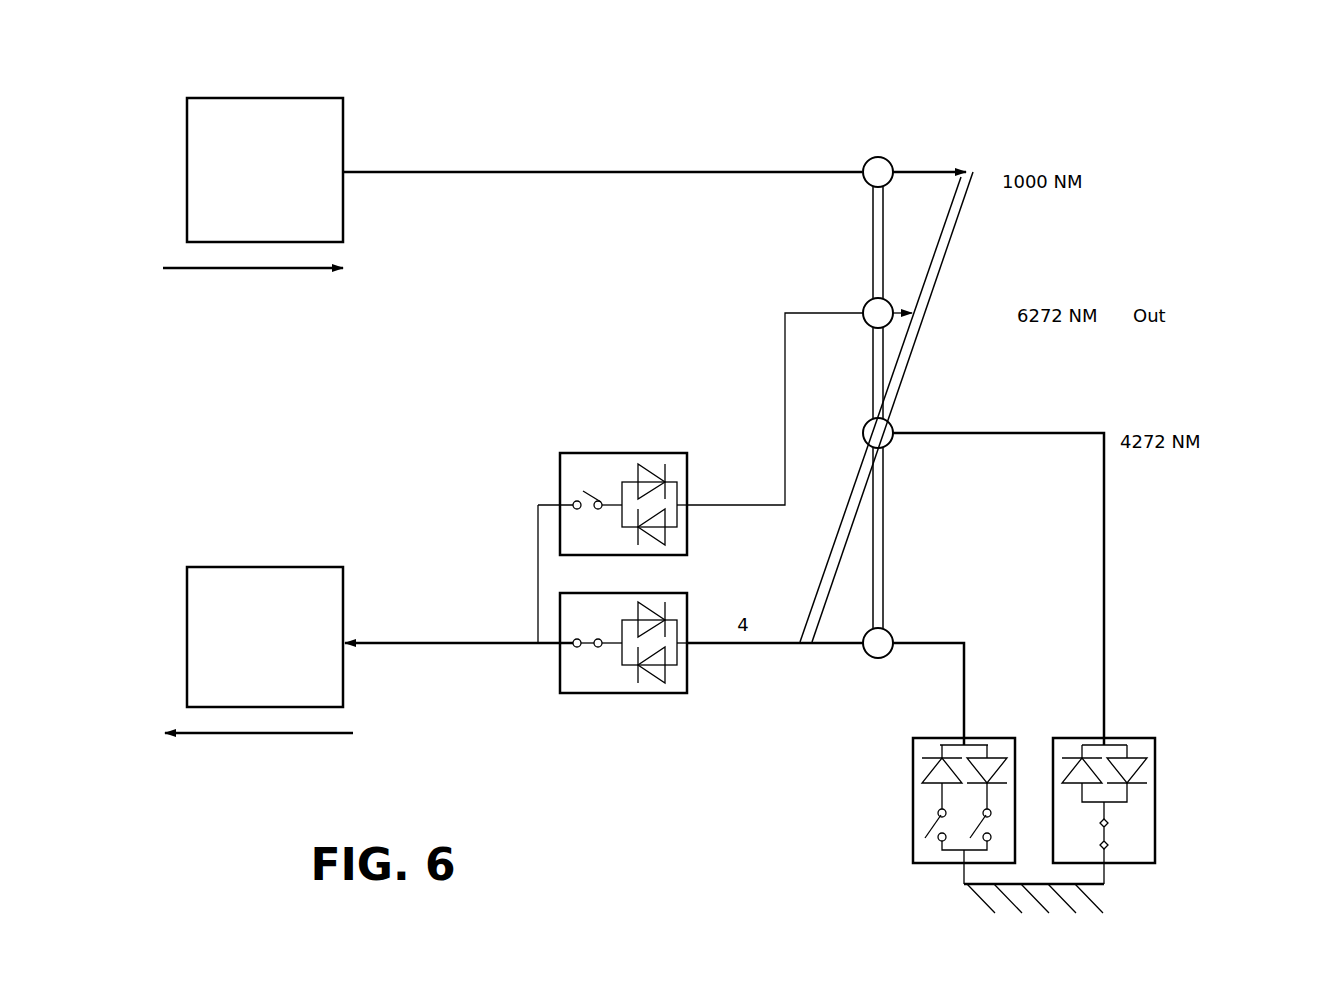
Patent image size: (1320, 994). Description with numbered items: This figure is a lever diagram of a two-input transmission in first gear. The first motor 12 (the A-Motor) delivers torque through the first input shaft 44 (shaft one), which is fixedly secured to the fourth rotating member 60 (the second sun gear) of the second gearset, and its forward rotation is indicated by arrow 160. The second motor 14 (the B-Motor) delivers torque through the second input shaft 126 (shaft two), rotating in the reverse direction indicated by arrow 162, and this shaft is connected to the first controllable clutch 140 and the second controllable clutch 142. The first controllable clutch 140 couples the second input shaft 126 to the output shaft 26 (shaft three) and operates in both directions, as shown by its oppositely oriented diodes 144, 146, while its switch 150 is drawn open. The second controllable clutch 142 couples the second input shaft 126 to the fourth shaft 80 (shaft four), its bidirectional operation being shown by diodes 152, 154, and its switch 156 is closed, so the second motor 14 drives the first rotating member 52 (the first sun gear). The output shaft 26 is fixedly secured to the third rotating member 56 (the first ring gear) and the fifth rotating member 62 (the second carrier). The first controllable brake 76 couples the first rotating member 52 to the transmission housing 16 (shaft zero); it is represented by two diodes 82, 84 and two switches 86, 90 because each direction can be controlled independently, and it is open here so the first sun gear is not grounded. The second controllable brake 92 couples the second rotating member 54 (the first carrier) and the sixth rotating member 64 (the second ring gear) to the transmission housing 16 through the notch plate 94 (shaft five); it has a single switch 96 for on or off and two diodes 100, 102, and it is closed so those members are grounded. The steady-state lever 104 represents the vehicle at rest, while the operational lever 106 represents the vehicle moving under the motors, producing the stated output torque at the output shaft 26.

The first motor 12 is at (270, 98).
The second motor 14 is at (267, 566).
The transmission housing 16 is at (978, 895).
The output shaft 26 is at (785, 348).
The first input shaft 44 is at (512, 175).
The first rotating member 52 is at (866, 653).
The second rotating member 54 is at (862, 433).
The third rotating member 56 is at (865, 328).
The fourth rotating member 60 is at (882, 158).
The fifth rotating member 62 is at (887, 300).
The sixth rotating member 64 is at (893, 428).
The first controllable brake 76 is at (942, 780).
The fourth shaft 80 is at (965, 688).
The diode 82 is at (930, 768).
The diode 84 is at (1005, 768).
The switch 86 is at (930, 825).
The switch 90 is at (990, 830).
The second controllable brake 92 is at (1146, 772).
The notch plate 94 is at (1105, 530).
The switch 96 is at (1110, 830).
The diode 100 is at (1053, 765).
The diode 102 is at (1145, 768).
The steady-state lever 104 is at (885, 550).
The operational lever 106 is at (822, 576).
The second input shaft 126 is at (397, 646).
The first controllable clutch 140 is at (625, 468).
The second controllable clutch 142 is at (607, 665).
The diode 144 is at (650, 470).
The diode 146 is at (656, 541).
The switch 150 is at (590, 495).
The diode 152 is at (650, 608).
The diode 154 is at (655, 682).
The switch 156 is at (590, 652).
The arrow 160 is at (260, 270).
The arrow 162 is at (255, 735).